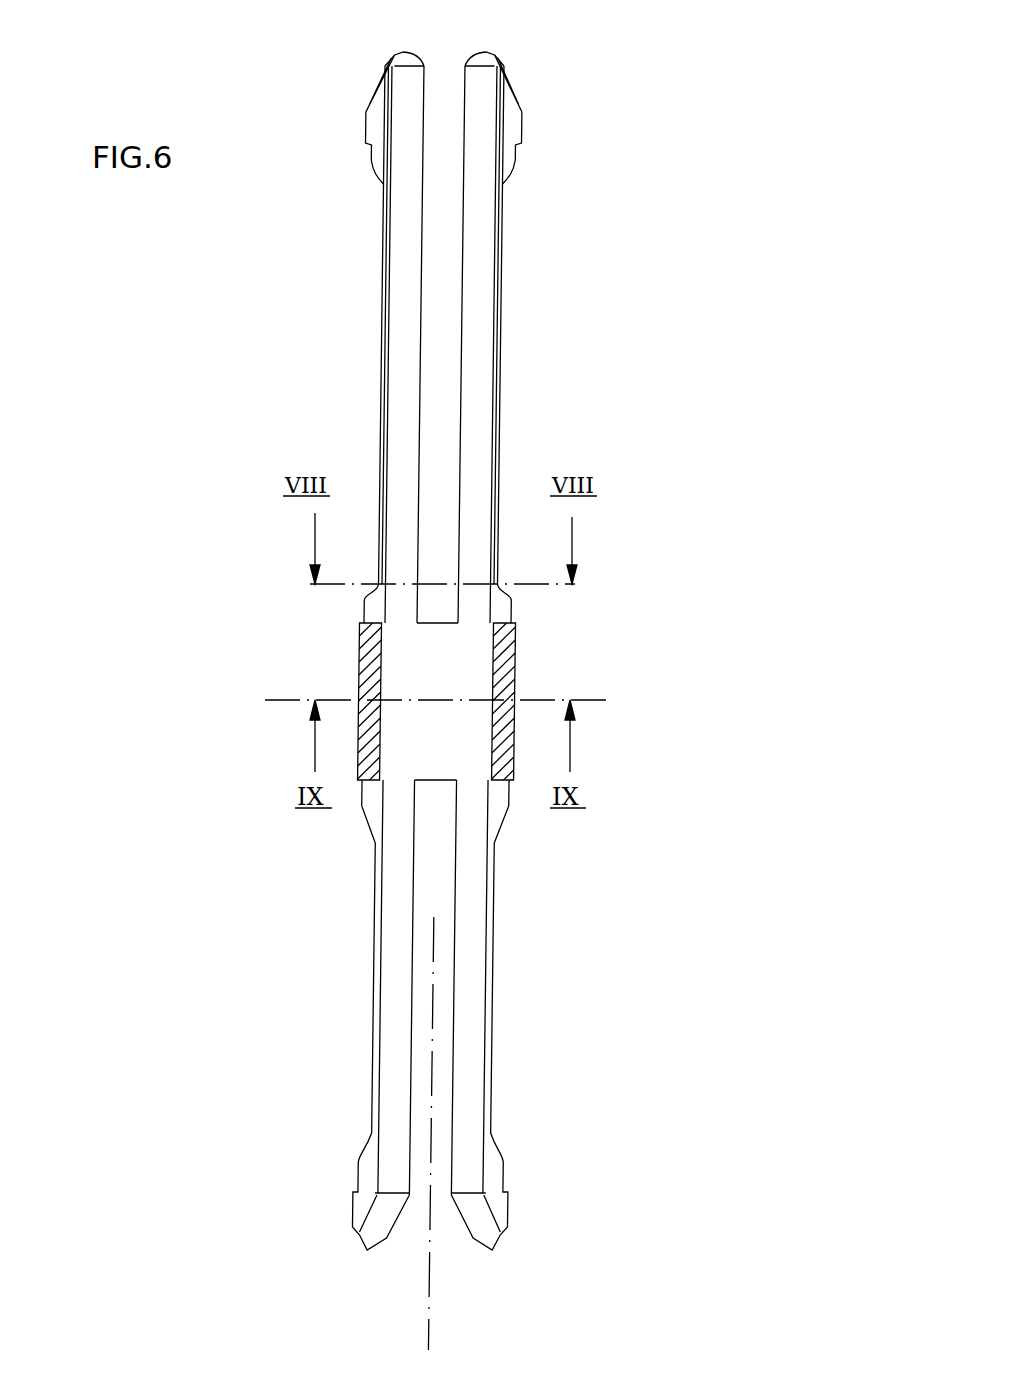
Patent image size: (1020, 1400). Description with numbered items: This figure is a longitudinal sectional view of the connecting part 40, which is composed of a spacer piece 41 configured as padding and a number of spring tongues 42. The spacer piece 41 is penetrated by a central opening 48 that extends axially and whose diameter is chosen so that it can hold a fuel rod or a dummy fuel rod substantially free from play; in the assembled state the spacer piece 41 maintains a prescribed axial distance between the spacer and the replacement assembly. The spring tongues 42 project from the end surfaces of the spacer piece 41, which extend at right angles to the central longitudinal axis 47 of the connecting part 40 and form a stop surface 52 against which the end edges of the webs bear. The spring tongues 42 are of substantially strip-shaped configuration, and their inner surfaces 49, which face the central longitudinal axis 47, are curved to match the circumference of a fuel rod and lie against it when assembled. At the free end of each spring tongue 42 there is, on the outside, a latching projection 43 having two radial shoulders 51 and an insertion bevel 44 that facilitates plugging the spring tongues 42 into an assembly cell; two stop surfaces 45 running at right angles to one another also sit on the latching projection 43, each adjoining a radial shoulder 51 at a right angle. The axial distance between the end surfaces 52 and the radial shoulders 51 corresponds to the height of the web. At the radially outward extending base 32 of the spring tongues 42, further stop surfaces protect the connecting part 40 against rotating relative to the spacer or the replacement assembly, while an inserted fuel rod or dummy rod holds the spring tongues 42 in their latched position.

The connecting part 40 is at (610, 181).
The base 32 is at (495, 795).
The spacer piece 41 is at (505, 665).
The spring tongues 42 is at (500, 305).
The latching projection 43 is at (538, 89).
The insertion bevel 44 is at (513, 82).
The stop surfaces 45 is at (517, 155).
The central longitudinal axis 47 is at (430, 1312).
The central opening 48 is at (415, 670).
The inner surfaces 49 is at (405, 230).
The radial shoulders 51 is at (365, 157).
The stop surface / end surfaces 52 is at (513, 618).